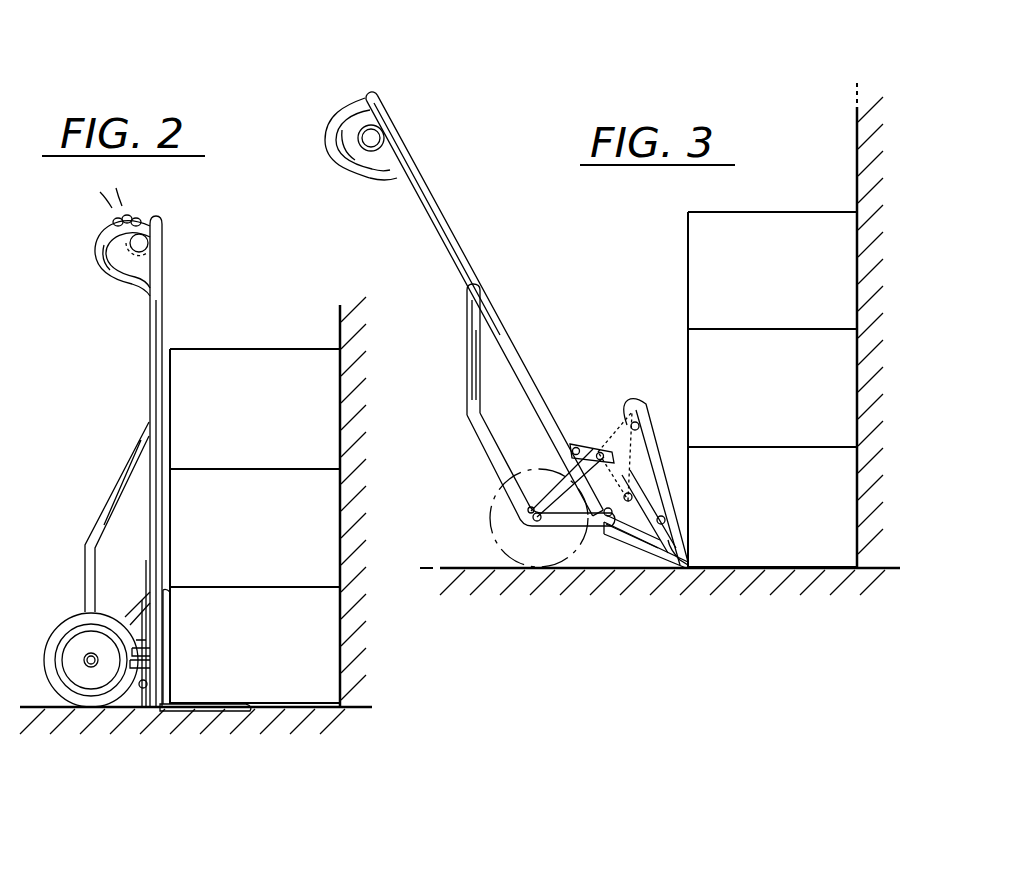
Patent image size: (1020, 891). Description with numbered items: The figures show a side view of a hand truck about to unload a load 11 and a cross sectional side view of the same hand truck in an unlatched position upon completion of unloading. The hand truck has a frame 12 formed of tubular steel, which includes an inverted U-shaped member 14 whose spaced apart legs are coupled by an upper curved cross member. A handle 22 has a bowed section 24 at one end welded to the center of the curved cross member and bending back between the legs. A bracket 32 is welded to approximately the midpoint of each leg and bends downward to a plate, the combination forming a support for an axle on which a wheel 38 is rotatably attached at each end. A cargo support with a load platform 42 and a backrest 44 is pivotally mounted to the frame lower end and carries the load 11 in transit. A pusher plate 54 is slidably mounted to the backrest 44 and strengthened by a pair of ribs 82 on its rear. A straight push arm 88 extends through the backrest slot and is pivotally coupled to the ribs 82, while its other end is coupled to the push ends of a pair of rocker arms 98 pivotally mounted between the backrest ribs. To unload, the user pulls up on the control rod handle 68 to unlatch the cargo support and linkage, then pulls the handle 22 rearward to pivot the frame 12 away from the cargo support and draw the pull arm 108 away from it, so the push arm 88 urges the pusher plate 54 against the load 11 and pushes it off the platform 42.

In FIG. 2, the load 11 is at (305, 658).
In FIG. 3, the load 11 is at (786, 496).
In FIG. 2, the frame 12 is at (150, 388).
In FIG. 3, the frame 12 is at (439, 222).
In FIG. 2, the inverted U-shaped member 14 is at (160, 218).
In FIG. 3, the inverted U-shaped member 14 is at (376, 100).
In FIG. 2, the handle 22 is at (114, 285).
In FIG. 3, the handle 22 is at (328, 132).
In FIG. 2, the bowed section 24 is at (104, 264).
In FIG. 3, the bowed section 24 is at (347, 168).
In FIG. 2, the bracket 32 is at (104, 510).
In FIG. 3, the bracket 32 is at (467, 330).
In FIG. 2, the wheel 38 is at (74, 620).
In FIG. 2, the load platform 42 is at (228, 713).
In FIG. 3, the load platform 42 is at (612, 536).
In FIG. 2, the backrest 44 is at (152, 576).
In FIG. 3, the backrest 44 is at (652, 416).
In FIG. 2, the pusher plate 54 is at (168, 610).
In FIG. 3, the pusher plate 54 is at (658, 473).
In FIG. 2, the control rod handle 68 is at (150, 253).
In FIG. 3, the control rod handle 68 is at (378, 138).
In FIG. 3, the ribs 82 is at (666, 545).
In FIG. 2, the push arm 88 is at (150, 662).
In FIG. 3, the push arm 88 is at (666, 508).
In FIG. 2, the rocker arms 98 is at (150, 648).
In FIG. 3, the rocker arms 98 is at (582, 445).
In FIG. 2, the pull arm 108 is at (135, 607).